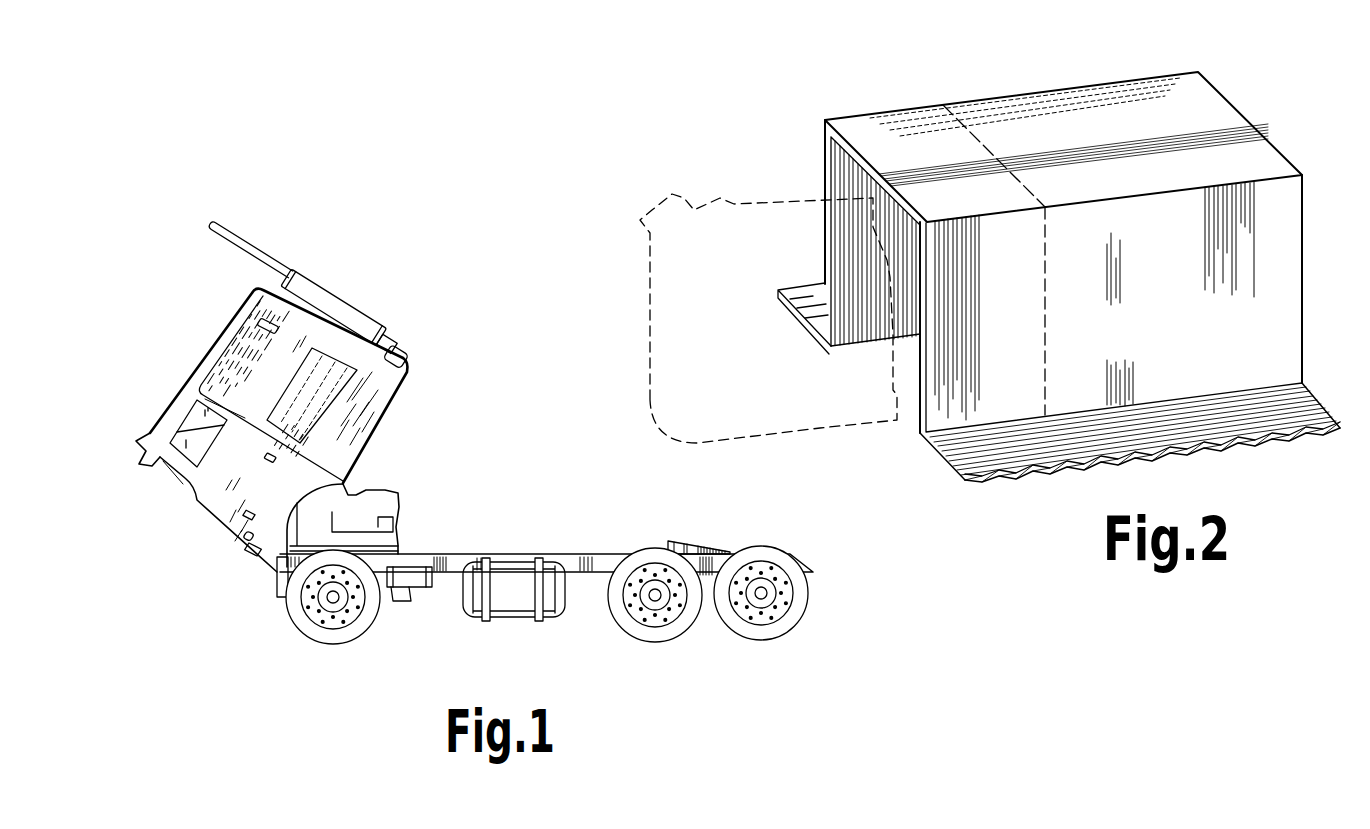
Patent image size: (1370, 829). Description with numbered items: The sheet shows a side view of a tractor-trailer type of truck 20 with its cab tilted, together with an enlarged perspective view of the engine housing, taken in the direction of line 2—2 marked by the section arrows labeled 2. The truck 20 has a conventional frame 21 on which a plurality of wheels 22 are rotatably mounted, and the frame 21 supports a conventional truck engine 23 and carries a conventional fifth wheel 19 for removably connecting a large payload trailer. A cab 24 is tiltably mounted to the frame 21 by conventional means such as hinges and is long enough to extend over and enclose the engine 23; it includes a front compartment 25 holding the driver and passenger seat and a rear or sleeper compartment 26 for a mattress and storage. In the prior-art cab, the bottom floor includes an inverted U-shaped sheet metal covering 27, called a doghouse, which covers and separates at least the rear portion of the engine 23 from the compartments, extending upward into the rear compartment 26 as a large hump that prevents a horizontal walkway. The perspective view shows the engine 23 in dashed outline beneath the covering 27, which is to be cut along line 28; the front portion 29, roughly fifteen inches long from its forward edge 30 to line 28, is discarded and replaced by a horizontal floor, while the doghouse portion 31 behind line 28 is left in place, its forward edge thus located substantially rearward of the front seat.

In FIG. 1, the line 2— 2 is at (180, 368).
In FIG. 1, the fifth wheel 19 is at (706, 546).
In FIG. 1, the truck 20 is at (491, 456).
In FIG. 1, the frame 21 is at (601, 551).
In FIG. 1, the wheels 22 is at (366, 600).
In FIG. 1, the truck engine 23 is at (398, 494).
In FIG. 2, the truck engine 23 is at (820, 428).
In FIG. 1, the cab 24 is at (192, 497).
In FIG. 1, the front compartment 25 is at (198, 400).
In FIG. 1, the rear or sleeper compartment 26 is at (293, 358).
In FIG. 1, the inverted U-shaped sheet metal covering 27 is at (372, 394).
In FIG. 2, the inverted U-shaped sheet metal covering 27 is at (1056, 256).
In FIG. 2, the cut line 28 is at (960, 118).
In FIG. 2, the front portion of the housing 29 is at (840, 128).
In FIG. 2, the forward edge 30 is at (830, 262).
In FIG. 2, the doghouse portion 31 is at (1091, 105).